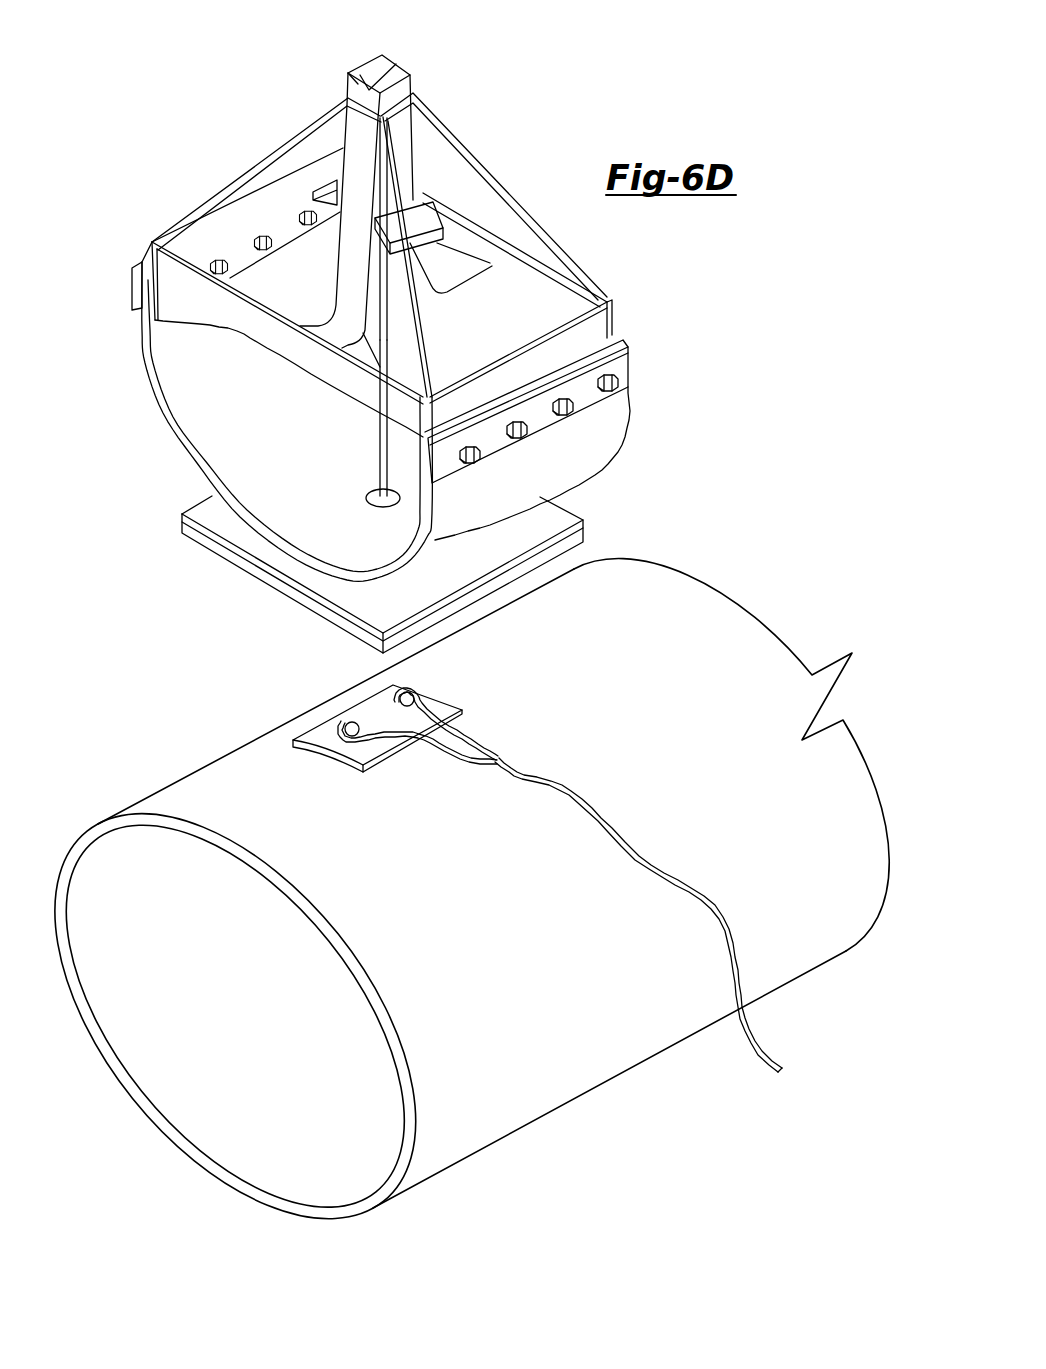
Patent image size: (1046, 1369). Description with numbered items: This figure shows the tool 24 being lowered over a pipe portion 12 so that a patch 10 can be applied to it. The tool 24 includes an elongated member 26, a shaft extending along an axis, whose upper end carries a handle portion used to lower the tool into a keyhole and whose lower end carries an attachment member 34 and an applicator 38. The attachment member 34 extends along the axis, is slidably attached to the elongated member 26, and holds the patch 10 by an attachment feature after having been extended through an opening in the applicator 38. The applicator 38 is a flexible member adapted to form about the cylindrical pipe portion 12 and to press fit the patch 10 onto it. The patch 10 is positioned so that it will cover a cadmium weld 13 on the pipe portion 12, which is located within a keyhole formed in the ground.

The patch 10 is at (600, 507).
The pipe portion 12 is at (648, 710).
The cadmium weld 13 is at (237, 746).
The tool 24 is at (225, 139).
The elongated member 26 is at (350, 88).
The attachment member 34 is at (380, 458).
The applicator 38 is at (262, 540).